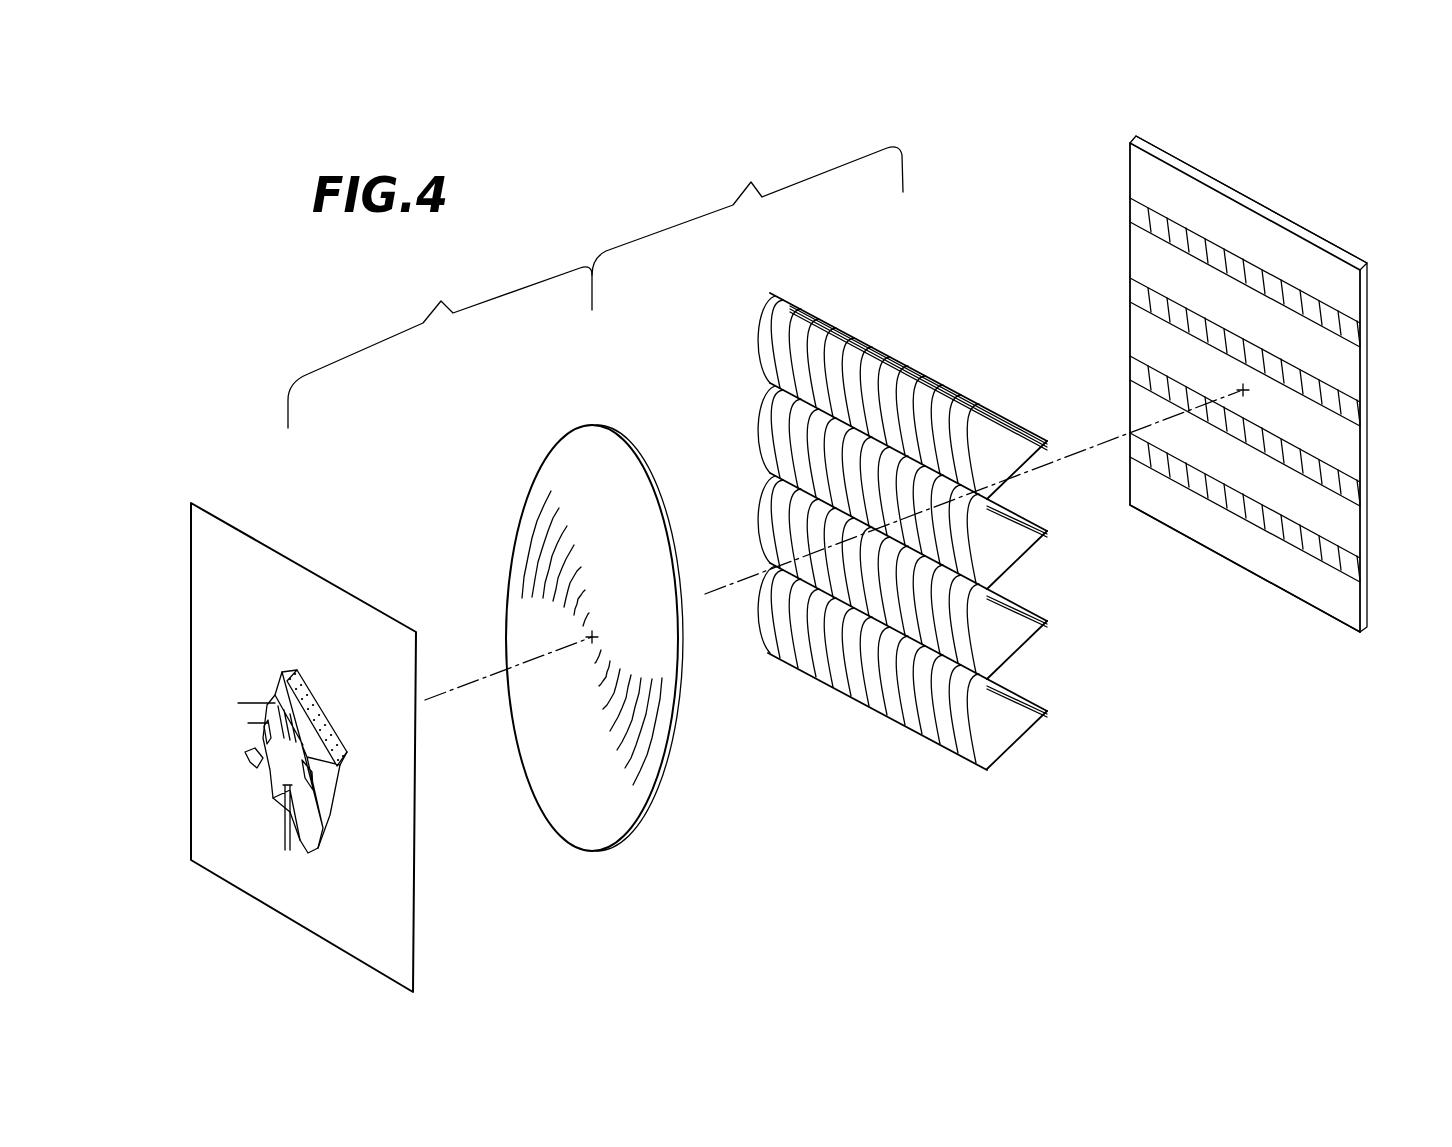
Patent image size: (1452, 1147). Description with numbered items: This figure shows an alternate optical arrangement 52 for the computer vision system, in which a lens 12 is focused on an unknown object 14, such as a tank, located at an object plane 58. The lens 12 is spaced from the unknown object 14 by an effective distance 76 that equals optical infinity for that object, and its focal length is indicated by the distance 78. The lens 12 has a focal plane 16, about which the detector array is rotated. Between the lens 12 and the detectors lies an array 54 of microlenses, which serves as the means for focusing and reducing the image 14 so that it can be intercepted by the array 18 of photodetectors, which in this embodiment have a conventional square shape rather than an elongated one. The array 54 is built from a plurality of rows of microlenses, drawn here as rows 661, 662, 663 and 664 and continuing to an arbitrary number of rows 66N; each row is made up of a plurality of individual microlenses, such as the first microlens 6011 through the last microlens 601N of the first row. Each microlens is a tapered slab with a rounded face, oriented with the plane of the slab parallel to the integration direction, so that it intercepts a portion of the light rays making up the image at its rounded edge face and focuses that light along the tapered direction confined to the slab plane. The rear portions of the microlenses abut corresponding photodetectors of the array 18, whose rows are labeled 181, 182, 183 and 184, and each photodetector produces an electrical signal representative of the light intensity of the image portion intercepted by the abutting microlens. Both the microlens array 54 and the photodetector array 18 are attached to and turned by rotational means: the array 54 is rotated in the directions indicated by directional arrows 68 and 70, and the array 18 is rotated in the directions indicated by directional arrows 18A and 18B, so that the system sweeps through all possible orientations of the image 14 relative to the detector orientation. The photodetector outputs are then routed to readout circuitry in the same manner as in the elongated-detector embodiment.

The lens 12 is at (627, 436).
The image of unknown object 14 is at (274, 700).
The focal plane 16 is at (470, 688).
The array of photodetectors 18 is at (1372, 220).
The directional arrow 18A is at (1285, 627).
The directional arrow 18B is at (1283, 172).
The first photodetector row 181 is at (1360, 347).
The second photodetector row 182 is at (1360, 427).
The third photodetector row 183 is at (1360, 507).
The fourth photodetector row 184 is at (1360, 583).
The optical arrangement 52 is at (963, 220).
The array of microlenses 54 is at (1020, 403).
The object plane 58 is at (300, 925).
The microlens 6011 is at (775, 292).
The microlens 601N is at (975, 415).
The first lenslet row 661 is at (766, 333).
The second lenslet row 662 is at (768, 427).
The third lenslet row 663 is at (768, 505).
The fourth lenslet row 664 is at (767, 612).
The last lenslet row 66N is at (980, 768).
The directional arrow 68 is at (908, 757).
The directional arrow 70 is at (935, 320).
The effective distance 76 is at (440, 345).
The focal length distance 78 is at (747, 211).